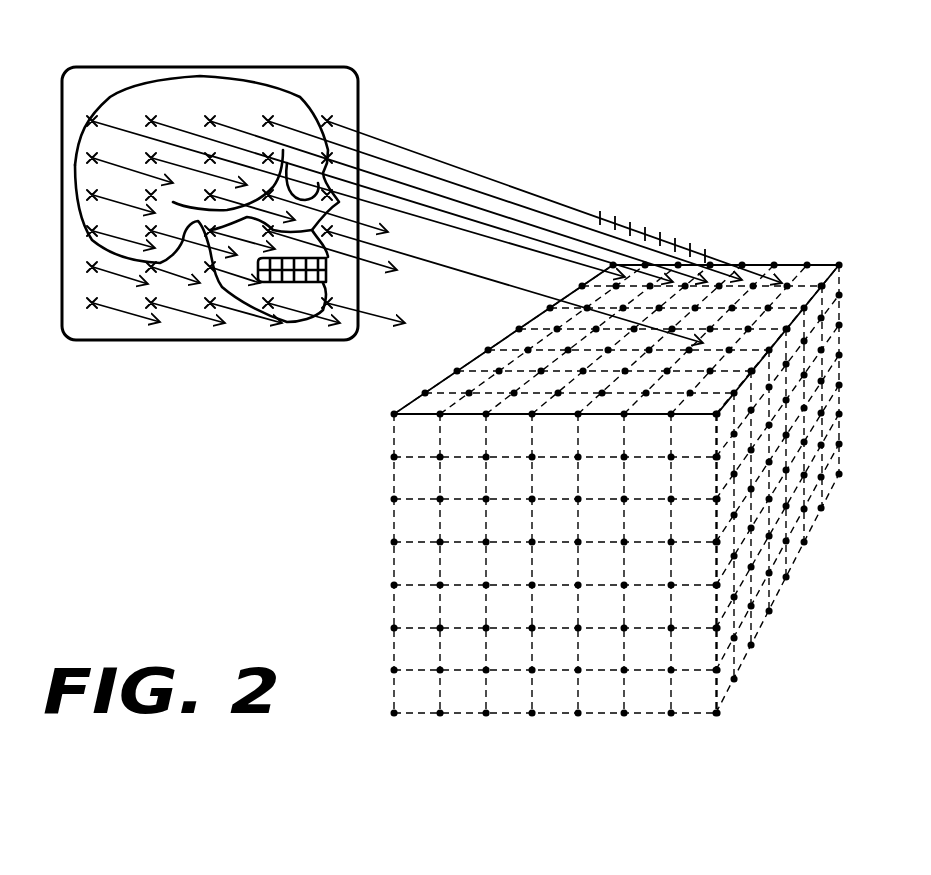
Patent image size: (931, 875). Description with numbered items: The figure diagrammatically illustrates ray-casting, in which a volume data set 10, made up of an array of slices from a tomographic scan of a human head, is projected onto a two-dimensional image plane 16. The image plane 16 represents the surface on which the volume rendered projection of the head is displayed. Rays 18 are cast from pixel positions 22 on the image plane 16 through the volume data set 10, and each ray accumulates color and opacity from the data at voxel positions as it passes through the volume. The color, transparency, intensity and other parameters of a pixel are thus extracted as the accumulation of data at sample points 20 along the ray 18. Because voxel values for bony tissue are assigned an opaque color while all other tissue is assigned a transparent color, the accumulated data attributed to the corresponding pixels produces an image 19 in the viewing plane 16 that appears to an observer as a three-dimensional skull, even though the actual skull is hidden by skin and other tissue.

The volume data set 10 is at (808, 567).
The two-dimensional image plane 16 is at (143, 62).
The rays 18 is at (492, 178).
The image 19 is at (245, 80).
The sample points 20 is at (640, 230).
The pixel positions 22 is at (330, 116).